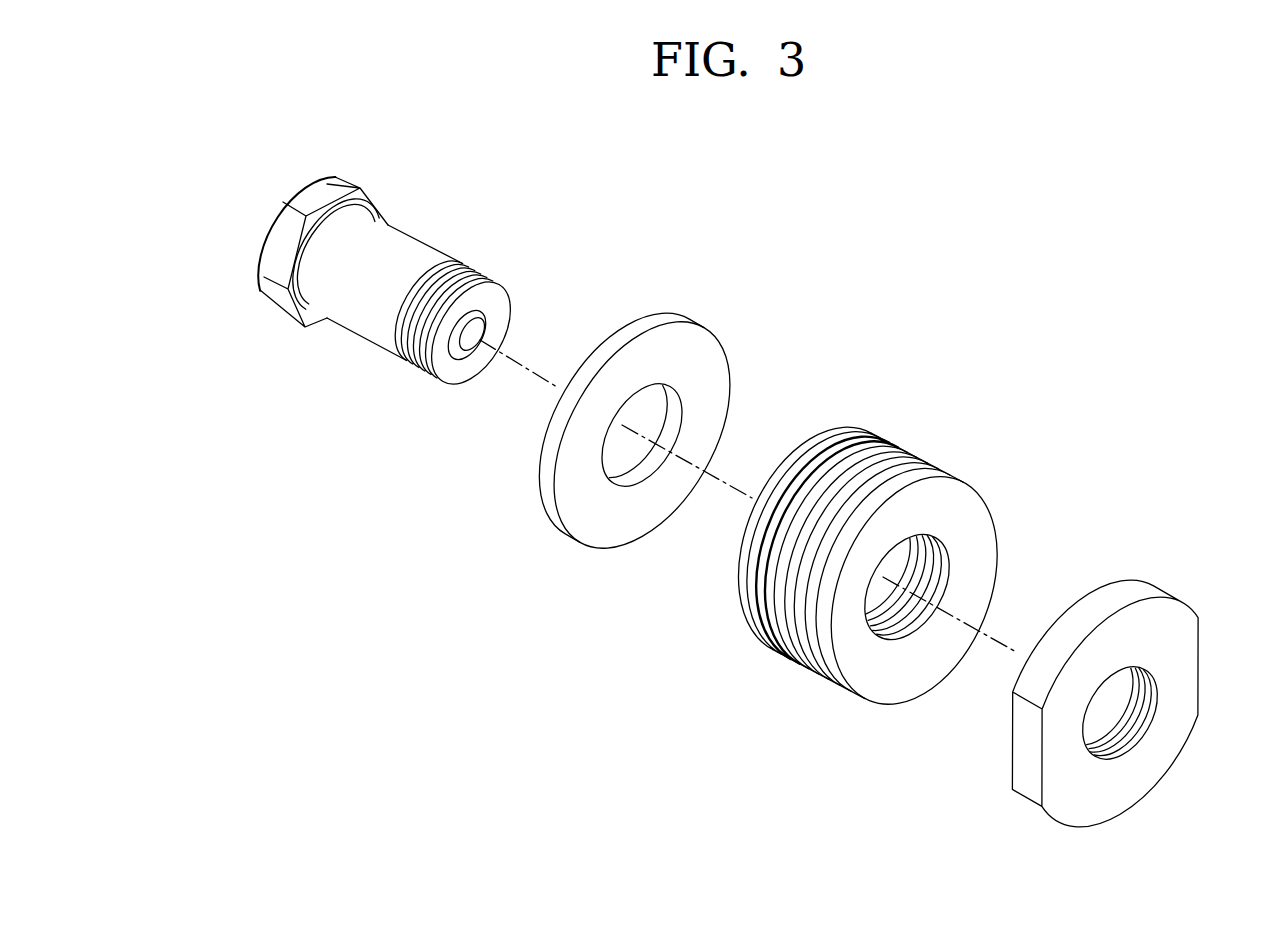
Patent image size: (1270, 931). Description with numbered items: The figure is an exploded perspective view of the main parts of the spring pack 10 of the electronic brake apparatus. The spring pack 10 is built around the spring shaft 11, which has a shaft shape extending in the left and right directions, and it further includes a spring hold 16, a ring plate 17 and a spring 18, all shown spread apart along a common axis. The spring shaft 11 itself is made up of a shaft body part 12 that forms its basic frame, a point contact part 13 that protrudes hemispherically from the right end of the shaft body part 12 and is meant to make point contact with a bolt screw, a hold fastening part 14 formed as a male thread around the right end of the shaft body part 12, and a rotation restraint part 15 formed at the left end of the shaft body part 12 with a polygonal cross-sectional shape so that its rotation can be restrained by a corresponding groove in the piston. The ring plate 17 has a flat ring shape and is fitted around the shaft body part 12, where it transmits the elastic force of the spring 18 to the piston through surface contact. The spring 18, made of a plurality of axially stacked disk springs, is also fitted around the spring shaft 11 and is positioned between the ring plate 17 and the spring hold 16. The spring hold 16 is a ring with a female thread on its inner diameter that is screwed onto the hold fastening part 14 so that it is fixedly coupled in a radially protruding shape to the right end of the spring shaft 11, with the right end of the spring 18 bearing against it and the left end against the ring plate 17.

The spring pack 10 is at (1000, 271).
The spring shaft 11 is at (415, 237).
The shaft body part 12 is at (367, 307).
The point contact part 13 is at (469, 352).
The hold fastening part 14 is at (411, 367).
The rotation restraint part 15 is at (270, 257).
The spring hold 16 is at (1173, 628).
The ring plate 17 is at (697, 353).
The spring 18 is at (957, 500).